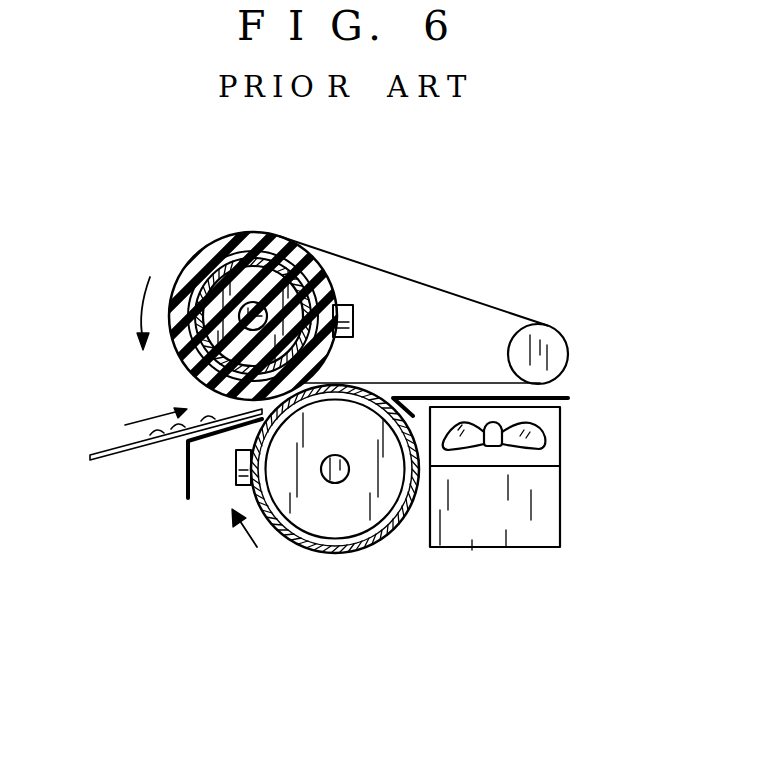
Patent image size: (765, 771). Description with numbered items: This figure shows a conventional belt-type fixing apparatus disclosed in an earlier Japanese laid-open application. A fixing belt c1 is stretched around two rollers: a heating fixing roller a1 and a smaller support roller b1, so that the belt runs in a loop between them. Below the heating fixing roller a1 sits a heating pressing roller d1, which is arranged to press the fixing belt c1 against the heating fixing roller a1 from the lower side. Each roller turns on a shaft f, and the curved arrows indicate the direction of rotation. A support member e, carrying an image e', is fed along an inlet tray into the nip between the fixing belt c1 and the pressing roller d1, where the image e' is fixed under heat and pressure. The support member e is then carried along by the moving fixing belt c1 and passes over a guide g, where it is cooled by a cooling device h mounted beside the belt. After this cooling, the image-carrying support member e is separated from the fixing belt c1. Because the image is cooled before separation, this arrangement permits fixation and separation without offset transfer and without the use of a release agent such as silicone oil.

The heating fixing roller a1 is at (262, 250).
The support roller b1 is at (545, 324).
The fixing belt c1 is at (410, 280).
The heating pressing roller d1 is at (395, 545).
The support member e is at (176, 471).
The image e' is at (209, 466).
The roller shaft f is at (250, 316).
The guide g is at (568, 398).
The cooling device h is at (513, 494).